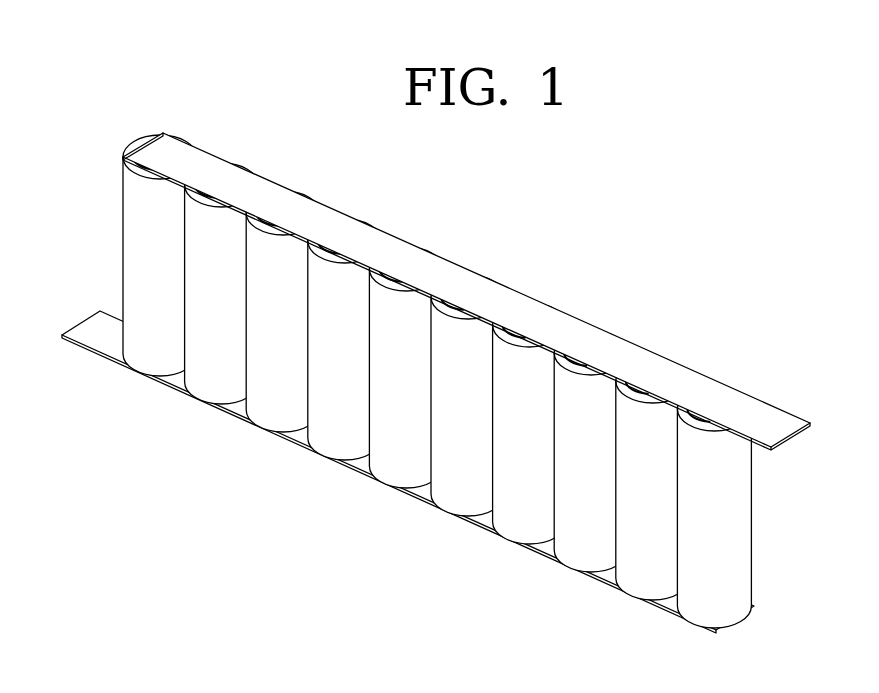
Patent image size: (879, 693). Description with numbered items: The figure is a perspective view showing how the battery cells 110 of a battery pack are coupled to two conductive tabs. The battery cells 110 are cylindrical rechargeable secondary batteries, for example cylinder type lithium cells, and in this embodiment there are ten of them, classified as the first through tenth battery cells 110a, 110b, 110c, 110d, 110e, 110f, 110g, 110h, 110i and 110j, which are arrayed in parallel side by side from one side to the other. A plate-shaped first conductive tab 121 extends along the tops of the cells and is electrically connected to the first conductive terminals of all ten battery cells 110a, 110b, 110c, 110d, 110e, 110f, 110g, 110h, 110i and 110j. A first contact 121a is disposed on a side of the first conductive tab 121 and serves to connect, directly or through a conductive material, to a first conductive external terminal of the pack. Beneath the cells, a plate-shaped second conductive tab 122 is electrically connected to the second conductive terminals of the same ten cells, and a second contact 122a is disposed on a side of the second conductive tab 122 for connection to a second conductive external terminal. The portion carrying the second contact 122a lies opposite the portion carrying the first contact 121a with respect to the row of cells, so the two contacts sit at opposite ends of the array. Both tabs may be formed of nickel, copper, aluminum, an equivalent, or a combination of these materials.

The battery cells 110 is at (394, 381).
The first battery cell 110a is at (160, 255).
The second battery cell 110b is at (222, 283).
The third battery cell 110c is at (283, 311).
The fourth battery cell 110d is at (345, 339).
The fifth battery cell 110e is at (406, 367).
The sixth battery cell 110f is at (468, 395).
The seventh battery cell 110g is at (530, 423).
The eighth battery cell 110h is at (591, 451).
The ninth battery cell 110i is at (653, 479).
The tenth battery cell 110j is at (714, 507).
The first conductive tab 121 is at (475, 322).
The first contact 121a is at (772, 415).
The second conductive tab 122 is at (390, 454).
The second contact 122a is at (78, 324).